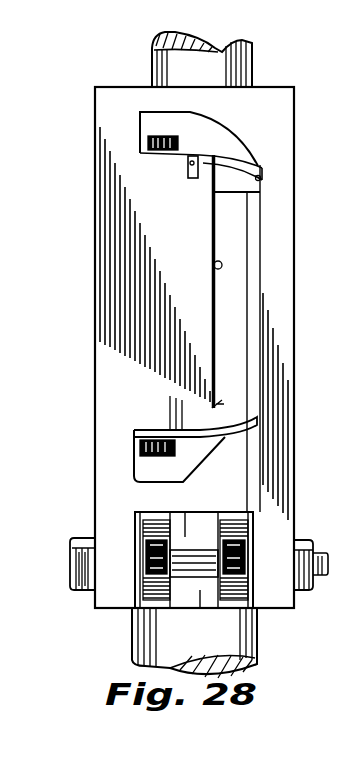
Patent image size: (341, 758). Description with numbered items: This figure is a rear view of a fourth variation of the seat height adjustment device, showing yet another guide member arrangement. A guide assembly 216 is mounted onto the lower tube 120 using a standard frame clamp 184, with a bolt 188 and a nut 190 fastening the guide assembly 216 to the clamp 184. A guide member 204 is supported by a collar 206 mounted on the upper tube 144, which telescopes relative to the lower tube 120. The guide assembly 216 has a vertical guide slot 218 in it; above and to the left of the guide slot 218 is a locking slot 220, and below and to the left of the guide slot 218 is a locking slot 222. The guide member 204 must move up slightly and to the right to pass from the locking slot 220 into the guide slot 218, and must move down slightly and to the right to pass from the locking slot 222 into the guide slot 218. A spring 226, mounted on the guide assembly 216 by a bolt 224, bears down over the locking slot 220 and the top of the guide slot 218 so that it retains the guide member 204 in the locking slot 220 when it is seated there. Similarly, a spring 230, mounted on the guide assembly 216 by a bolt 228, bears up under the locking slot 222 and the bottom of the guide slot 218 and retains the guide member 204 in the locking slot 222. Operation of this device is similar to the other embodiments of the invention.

The upper tube 144 is at (253, 62).
The bolt 224 is at (152, 137).
The locking slot 220 is at (188, 160).
The guide member 204 is at (203, 173).
The spring 226 is at (262, 180).
The collar 206 is at (260, 186).
The guide slot 218 is at (214, 265).
The locking slot 222 is at (189, 430).
The bolt 228 is at (160, 451).
The spring 230 is at (228, 432).
The guide assembly 216 is at (86, 486).
The bolt 188 is at (86, 592).
The frame clamp 184 is at (167, 605).
The nut 190 is at (312, 592).
The lower tube 120 is at (257, 655).